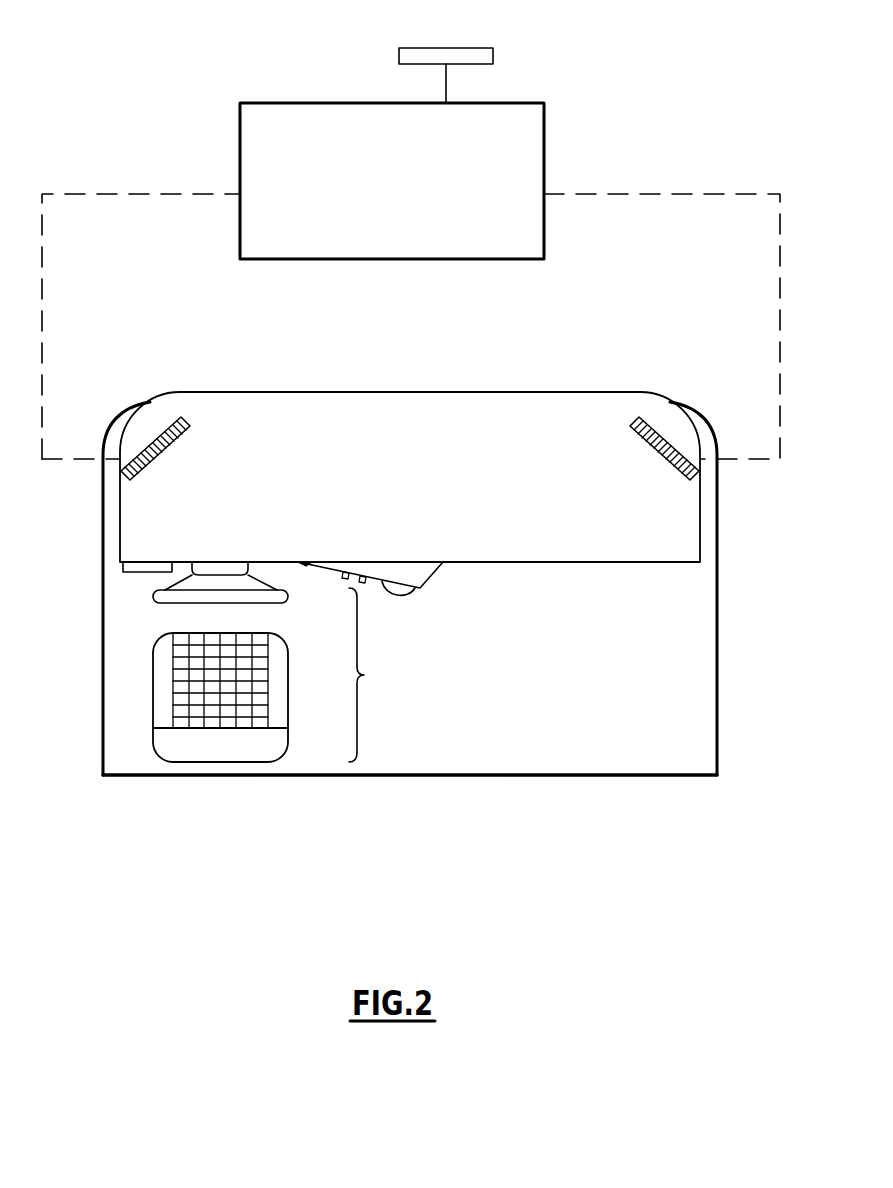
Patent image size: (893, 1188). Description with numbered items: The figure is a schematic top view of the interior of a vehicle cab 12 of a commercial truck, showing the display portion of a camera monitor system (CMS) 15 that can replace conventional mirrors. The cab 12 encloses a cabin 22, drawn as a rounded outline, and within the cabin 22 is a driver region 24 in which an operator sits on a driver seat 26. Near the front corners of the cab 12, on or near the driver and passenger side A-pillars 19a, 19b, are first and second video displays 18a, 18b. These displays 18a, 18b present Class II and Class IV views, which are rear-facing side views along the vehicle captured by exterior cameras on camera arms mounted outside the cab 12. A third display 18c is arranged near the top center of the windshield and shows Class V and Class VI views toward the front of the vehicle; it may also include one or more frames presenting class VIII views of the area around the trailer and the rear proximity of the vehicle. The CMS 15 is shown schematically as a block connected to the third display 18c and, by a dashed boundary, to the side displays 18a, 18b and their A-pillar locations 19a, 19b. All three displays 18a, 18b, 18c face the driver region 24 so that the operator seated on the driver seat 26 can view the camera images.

The vehicle cab 12 is at (526, 368).
The camera monitor system 15 is at (544, 117).
The first video display 18a is at (148, 427).
The second video display 18b is at (670, 427).
The third display 18c is at (477, 48).
The A-pillar 19a is at (118, 430).
The A-pillar 19b is at (702, 430).
The cabin 22 is at (634, 722).
The driver region 24 is at (371, 675).
The driver seat 26 is at (277, 683).